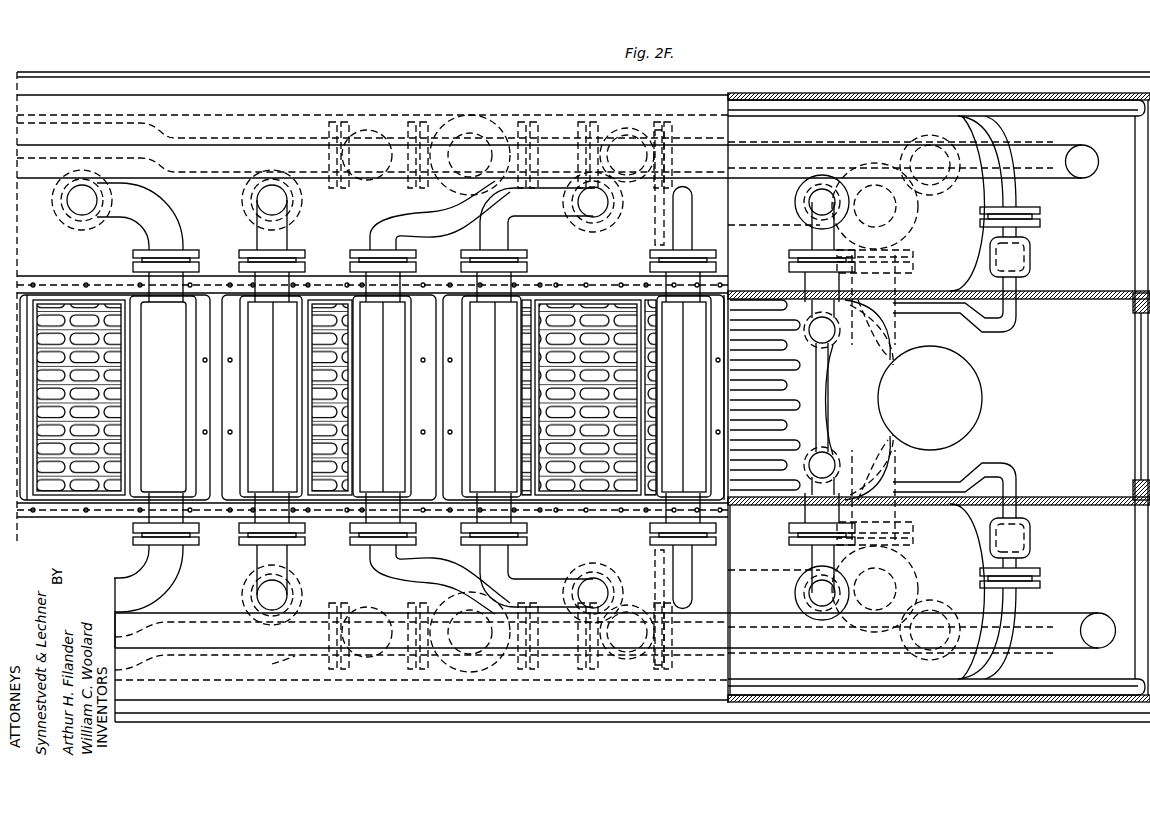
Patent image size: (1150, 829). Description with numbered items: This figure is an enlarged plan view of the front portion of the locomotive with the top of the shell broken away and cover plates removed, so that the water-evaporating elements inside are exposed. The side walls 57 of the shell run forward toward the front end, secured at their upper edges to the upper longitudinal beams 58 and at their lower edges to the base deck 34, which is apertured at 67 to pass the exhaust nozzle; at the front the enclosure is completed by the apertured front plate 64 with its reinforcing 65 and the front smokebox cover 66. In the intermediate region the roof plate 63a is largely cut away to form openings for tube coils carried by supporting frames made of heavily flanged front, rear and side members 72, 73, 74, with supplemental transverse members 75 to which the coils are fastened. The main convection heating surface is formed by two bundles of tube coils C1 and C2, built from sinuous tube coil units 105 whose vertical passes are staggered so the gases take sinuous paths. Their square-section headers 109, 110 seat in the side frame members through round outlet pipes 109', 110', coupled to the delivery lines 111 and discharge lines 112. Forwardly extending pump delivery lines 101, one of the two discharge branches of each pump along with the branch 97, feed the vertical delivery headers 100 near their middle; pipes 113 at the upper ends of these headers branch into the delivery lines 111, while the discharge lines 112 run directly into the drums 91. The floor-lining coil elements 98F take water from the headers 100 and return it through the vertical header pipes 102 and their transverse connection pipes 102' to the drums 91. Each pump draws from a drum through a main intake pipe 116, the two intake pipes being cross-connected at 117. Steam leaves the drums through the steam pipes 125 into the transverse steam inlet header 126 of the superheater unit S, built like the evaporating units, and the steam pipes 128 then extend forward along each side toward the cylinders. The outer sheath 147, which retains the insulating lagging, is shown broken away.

The superheater unit S is at (62, 318).
The transverse steam inlet header 126 is at (163, 396).
The steam pipes 125 is at (125, 391).
The steam pipes 128 is at (188, 178).
The discharge lines 112 is at (279, 229).
The upper longitudinal beams 58 is at (214, 280).
The delivery lines 111 is at (689, 584).
The roof plate 63a is at (438, 290).
The header 110 is at (514, 375).
The round outlet pipe 110' is at (509, 369).
The side members 74 is at (557, 290).
The supplemental transverse members 75 is at (617, 302).
The header 109 is at (663, 375).
The round outlet pipe 109' is at (712, 376).
The vertical header pipes 102 is at (839, 397).
The transverse connection pipes 102' is at (842, 397).
The drums 91 is at (890, 397).
The vertical delivery headers 100 is at (1030, 256).
The pipes 113 is at (986, 140).
The pump delivery lines 101 is at (1037, 147).
The side walls 57 is at (1033, 294).
The apertured front plate 64 is at (1135, 338).
The base deck 34 is at (1108, 397).
The front smokebox cover 66 is at (1148, 407).
The reinforcing 65 is at (1130, 486).
The aperture 67 is at (982, 411).
The cross-connection 117 is at (862, 422).
The forwardly extending tube elements 98F is at (795, 388).
The main intake pipe 116 is at (737, 570).
The rear member 73 is at (445, 510).
The tube coil units 105 is at (560, 465).
The front member 72 is at (713, 510).
The pump discharge branch 97 is at (274, 664).
The outer sheath 147 is at (757, 700).
The tube coil bundle C1 is at (342, 391).
The tube coil bundle C2 is at (605, 397).